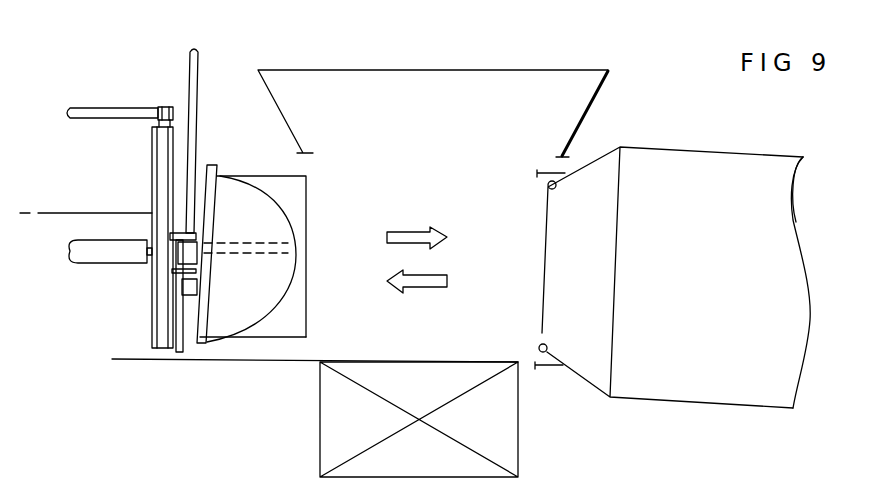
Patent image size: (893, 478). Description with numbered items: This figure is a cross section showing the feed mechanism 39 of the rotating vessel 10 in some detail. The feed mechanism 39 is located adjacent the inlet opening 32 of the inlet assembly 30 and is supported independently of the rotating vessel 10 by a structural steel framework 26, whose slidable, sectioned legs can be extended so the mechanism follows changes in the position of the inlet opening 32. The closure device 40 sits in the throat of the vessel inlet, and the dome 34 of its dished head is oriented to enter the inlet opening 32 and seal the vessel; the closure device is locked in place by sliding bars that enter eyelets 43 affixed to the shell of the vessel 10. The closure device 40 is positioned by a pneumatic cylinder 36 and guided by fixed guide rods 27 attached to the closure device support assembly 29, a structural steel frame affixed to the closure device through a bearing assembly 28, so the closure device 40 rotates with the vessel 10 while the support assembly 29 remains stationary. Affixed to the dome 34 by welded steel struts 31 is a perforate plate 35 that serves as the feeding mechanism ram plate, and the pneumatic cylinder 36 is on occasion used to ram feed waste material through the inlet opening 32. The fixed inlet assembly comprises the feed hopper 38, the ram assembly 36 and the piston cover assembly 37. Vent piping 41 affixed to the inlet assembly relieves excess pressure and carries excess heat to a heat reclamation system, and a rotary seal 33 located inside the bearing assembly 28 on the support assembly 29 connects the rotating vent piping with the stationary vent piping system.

The vessel 10 is at (686, 148).
The structural steel framework 26 is at (320, 452).
The fixed guide rods 27 is at (98, 109).
The bearing assembly 28 is at (177, 320).
The closure device support assembly 29 is at (163, 192).
The inlet assembly 30 is at (106, 44).
The welded steel struts 31 is at (268, 176).
The inlet opening 32 is at (549, 336).
The rotary seal 33 is at (177, 260).
The dome of the dished head 34 is at (238, 155).
The perforate plate 35 is at (307, 201).
The pneumatic cylinder 36 is at (106, 258).
The piston cover assembly 37 is at (82, 213).
The feed hopper 38 is at (327, 317).
The feed mechanism 39 is at (107, 317).
The closure device 40 is at (238, 338).
The vent piping 41 is at (196, 88).
The eyelets 43 is at (543, 172).